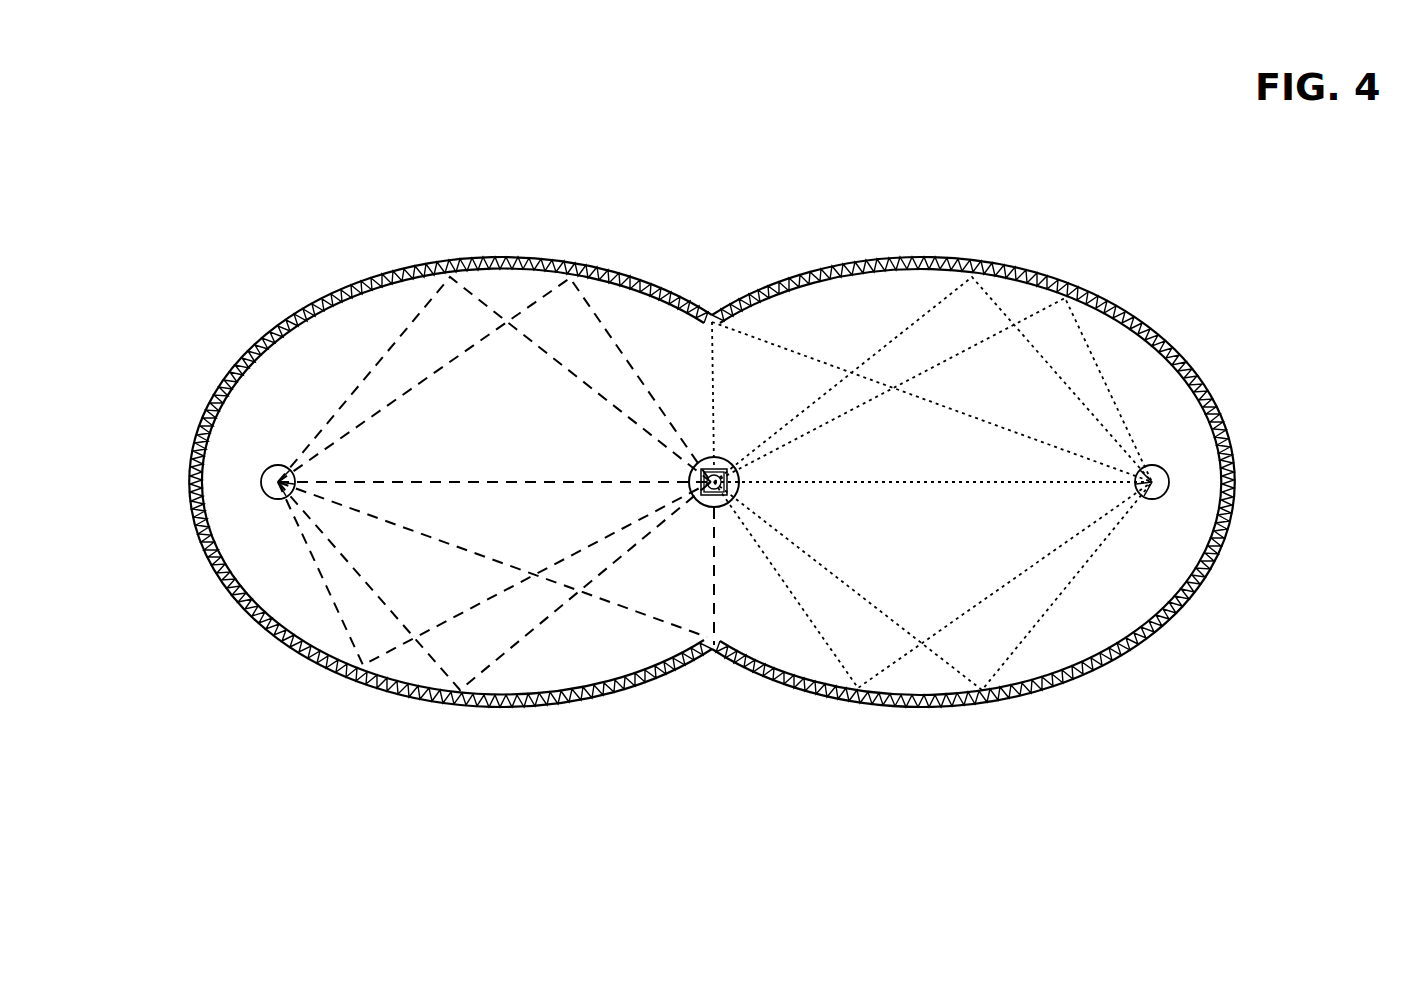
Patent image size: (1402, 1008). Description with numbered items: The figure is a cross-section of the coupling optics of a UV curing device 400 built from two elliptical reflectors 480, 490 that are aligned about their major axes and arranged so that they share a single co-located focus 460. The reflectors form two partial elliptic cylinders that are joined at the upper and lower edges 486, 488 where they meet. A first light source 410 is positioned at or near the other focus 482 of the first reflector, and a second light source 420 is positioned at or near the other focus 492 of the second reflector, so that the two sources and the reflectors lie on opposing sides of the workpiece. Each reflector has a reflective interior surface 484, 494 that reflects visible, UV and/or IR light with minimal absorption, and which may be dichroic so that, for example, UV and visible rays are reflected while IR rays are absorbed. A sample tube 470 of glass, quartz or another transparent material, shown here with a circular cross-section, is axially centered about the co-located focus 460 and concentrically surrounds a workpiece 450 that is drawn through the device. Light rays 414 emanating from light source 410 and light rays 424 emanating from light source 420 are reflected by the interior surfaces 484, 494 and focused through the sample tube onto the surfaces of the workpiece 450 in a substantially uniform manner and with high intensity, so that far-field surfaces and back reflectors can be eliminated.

The UV curing device 400 is at (1222, 250).
The light source 410 is at (262, 489).
The light rays 414 is at (342, 618).
The light source 420 is at (1170, 487).
The light rays 424 is at (1093, 552).
The workpiece 450 is at (716, 458).
The co-located focus 460 is at (740, 490).
The sample tube 470 is at (712, 508).
The elliptical reflector 480 is at (434, 262).
The focus 482 is at (270, 481).
The reflective interior surface 484 is at (288, 332).
The edge 486 is at (714, 657).
The edge 488 is at (711, 313).
The elliptical reflector 490 is at (950, 258).
The focus 492 is at (1160, 481).
The reflective interior surface 494 is at (1153, 336).